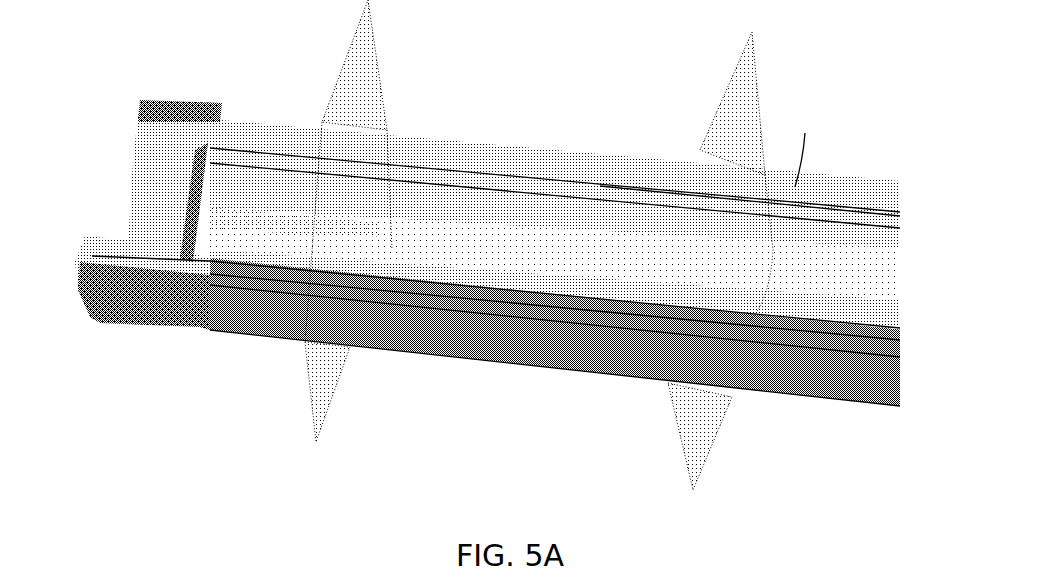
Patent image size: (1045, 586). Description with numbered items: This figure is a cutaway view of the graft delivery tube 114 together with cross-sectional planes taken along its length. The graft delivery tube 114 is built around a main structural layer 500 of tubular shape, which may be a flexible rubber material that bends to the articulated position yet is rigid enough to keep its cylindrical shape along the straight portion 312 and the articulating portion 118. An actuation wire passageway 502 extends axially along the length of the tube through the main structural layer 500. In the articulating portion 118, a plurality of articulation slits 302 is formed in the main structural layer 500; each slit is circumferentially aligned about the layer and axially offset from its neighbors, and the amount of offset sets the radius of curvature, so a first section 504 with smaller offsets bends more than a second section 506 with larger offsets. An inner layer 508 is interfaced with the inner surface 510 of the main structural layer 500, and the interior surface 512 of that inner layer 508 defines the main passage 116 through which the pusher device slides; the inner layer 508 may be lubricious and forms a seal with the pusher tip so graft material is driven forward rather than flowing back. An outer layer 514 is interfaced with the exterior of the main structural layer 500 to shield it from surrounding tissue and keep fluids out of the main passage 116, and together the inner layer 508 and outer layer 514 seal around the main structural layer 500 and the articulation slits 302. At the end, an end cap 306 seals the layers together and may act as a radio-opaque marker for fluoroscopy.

The graft delivery tube 114 is at (560, 140).
The main passage 116 is at (262, 200).
The articulating portion 118 is at (290, 405).
The plurality of articulation slits 302 is at (215, 280).
The end cap 306 is at (150, 165).
The straight portion 312 is at (855, 172).
The main structural layer 500 is at (522, 165).
The actuation wire passageway 502 is at (90, 255).
The first section 504 is at (462, 370).
The second section 506 is at (278, 345).
The inner layer 508 is at (463, 175).
The inner surface 510 is at (602, 185).
The interior surface 512 is at (650, 195).
The outer layer 514 is at (417, 135).